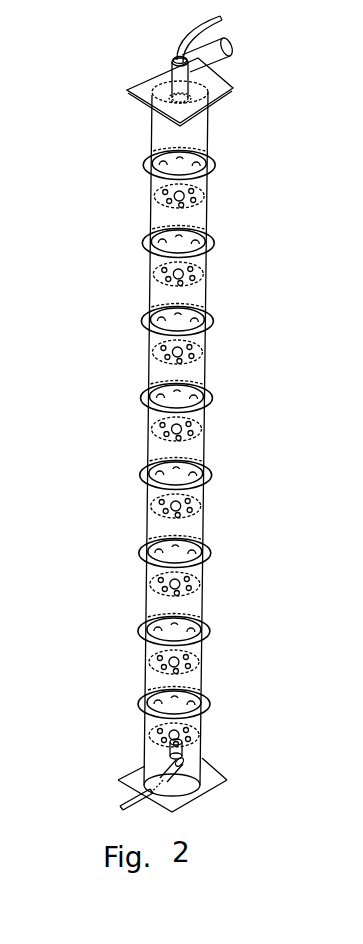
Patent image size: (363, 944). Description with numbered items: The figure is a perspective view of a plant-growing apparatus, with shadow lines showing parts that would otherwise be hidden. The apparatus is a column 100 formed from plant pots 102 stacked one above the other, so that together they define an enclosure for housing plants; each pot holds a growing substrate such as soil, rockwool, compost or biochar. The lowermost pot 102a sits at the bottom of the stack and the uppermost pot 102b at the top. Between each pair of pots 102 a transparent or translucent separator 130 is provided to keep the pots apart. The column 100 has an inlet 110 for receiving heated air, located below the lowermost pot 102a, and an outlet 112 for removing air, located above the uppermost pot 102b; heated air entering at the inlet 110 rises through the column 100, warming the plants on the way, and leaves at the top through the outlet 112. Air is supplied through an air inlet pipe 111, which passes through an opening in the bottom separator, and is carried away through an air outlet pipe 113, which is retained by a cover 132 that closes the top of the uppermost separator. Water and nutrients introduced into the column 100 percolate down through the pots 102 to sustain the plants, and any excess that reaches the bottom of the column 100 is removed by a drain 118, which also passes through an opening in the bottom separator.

The column 100 is at (106, 271).
The plant pot 102 is at (212, 322).
The lowermost pot 102a is at (206, 702).
The uppermost pot 102b is at (214, 163).
The inlet 110 is at (180, 750).
The air inlet pipe 111 is at (186, 760).
The outlet 112 is at (186, 100).
The air outlet pipe 113 is at (220, 52).
The drain 118 is at (118, 804).
The separator 130 is at (207, 294).
The cover 132 is at (232, 94).